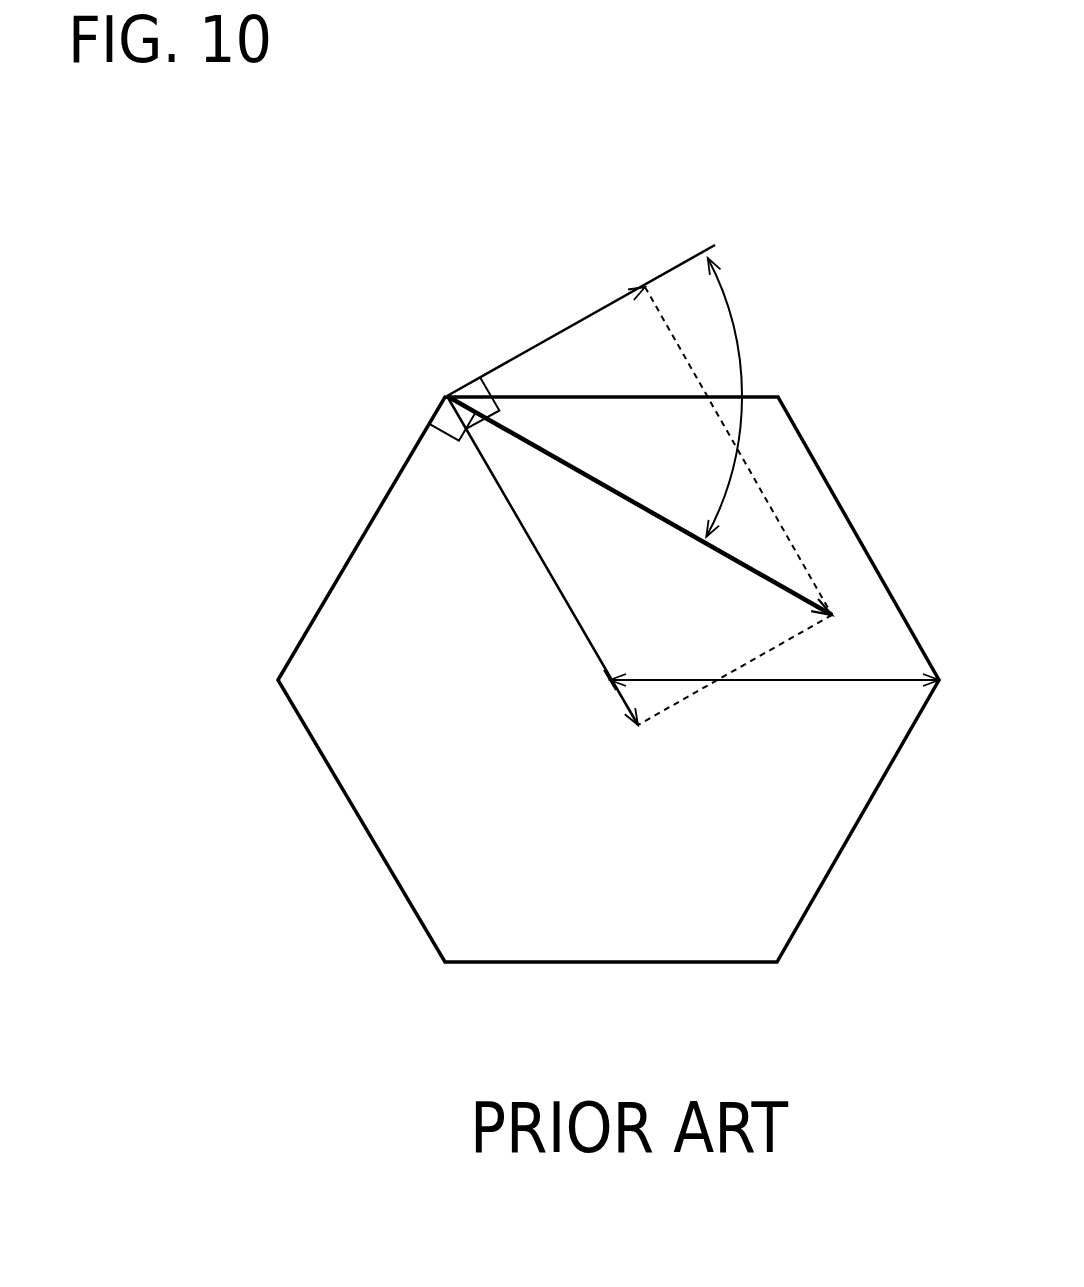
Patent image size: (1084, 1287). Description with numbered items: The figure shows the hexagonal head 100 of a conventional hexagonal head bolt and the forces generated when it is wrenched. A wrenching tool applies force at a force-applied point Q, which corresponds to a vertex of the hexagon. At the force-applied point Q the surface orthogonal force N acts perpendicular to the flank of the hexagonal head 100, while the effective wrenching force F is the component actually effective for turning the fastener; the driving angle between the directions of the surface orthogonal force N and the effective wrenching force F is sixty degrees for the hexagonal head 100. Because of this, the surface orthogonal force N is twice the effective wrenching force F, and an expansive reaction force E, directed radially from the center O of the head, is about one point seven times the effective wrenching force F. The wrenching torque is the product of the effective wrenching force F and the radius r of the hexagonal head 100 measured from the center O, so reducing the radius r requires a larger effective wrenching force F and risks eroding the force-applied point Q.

The hexagonal head 100 is at (367, 787).
The force-applied point Q is at (455, 399).
The effective wrenching force F is at (639, 430).
The surface orthogonal force N is at (656, 560).
The expansive reaction force E is at (547, 588).
The center point O is at (593, 698).
The radius r is at (774, 704).